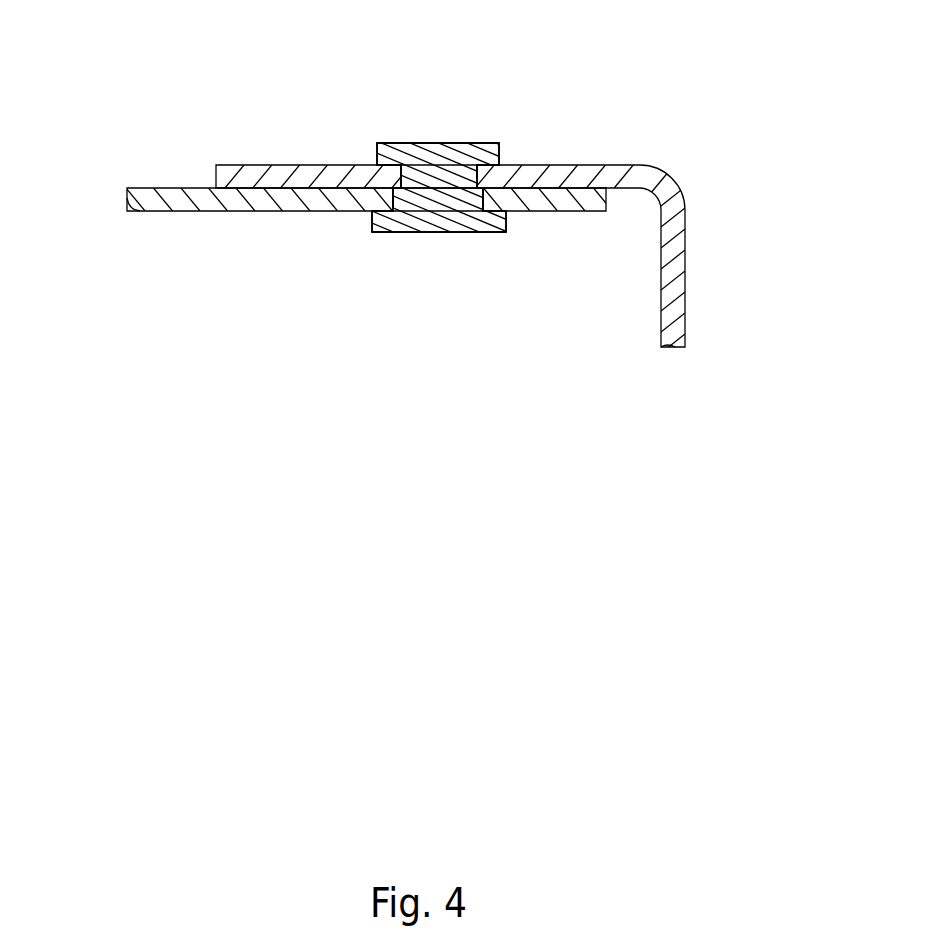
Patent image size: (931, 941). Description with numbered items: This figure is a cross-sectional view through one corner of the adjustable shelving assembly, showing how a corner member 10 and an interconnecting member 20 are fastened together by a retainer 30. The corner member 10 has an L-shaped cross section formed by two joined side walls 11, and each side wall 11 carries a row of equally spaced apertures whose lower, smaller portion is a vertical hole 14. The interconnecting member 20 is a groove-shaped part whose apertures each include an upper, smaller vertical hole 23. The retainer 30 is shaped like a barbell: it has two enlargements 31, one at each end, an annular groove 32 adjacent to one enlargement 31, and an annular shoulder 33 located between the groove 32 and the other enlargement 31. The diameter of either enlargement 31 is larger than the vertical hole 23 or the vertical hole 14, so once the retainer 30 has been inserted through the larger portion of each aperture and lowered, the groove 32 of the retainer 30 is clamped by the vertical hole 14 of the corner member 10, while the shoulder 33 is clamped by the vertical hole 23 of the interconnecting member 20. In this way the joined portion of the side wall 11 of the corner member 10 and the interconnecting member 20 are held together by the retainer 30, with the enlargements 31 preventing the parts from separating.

The corner member 10 is at (698, 277).
The side wall 11 is at (308, 166).
The vertical hole 14 is at (468, 174).
The interconnecting member 20 is at (170, 230).
The vertical hole 23 is at (487, 190).
The retainer 30 is at (483, 115).
The enlargement 31 is at (392, 144).
The annular groove 32 is at (468, 174).
The annular shoulder 33 is at (487, 190).